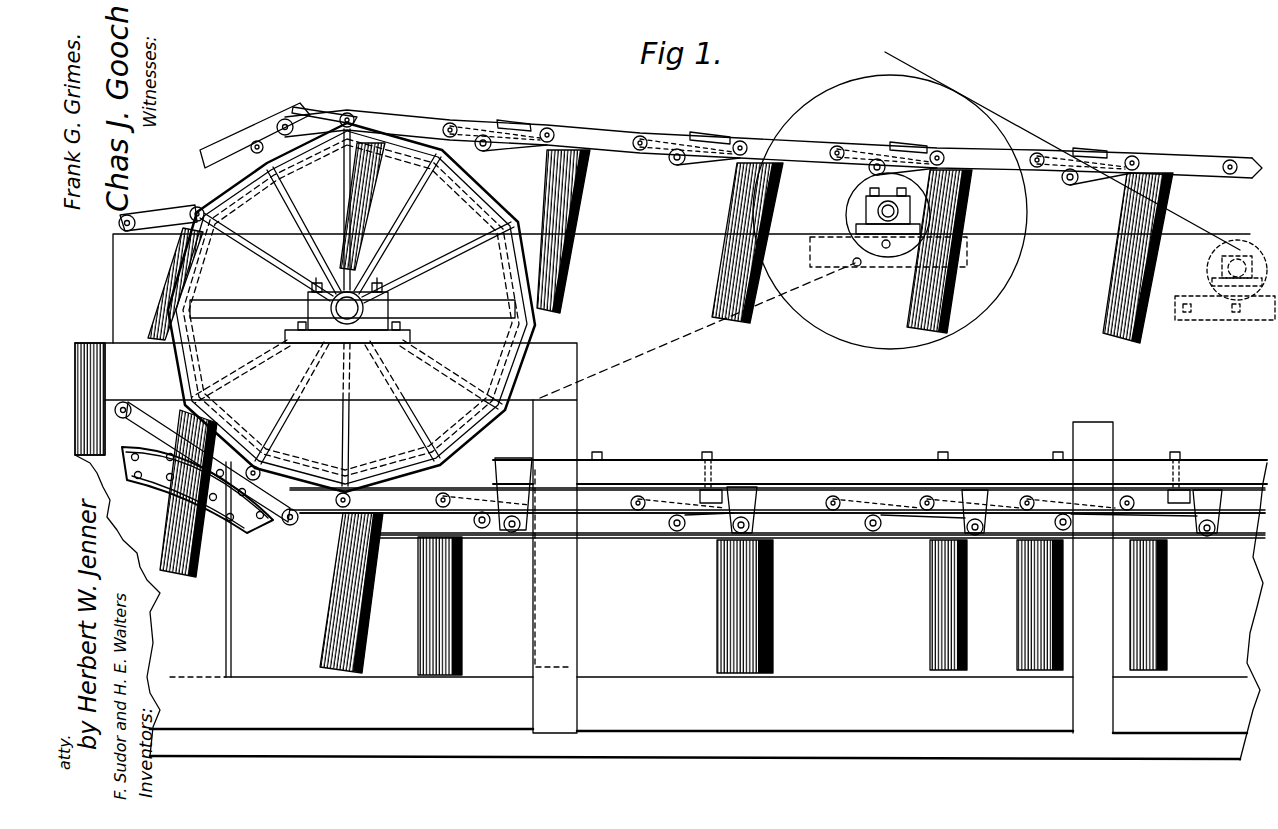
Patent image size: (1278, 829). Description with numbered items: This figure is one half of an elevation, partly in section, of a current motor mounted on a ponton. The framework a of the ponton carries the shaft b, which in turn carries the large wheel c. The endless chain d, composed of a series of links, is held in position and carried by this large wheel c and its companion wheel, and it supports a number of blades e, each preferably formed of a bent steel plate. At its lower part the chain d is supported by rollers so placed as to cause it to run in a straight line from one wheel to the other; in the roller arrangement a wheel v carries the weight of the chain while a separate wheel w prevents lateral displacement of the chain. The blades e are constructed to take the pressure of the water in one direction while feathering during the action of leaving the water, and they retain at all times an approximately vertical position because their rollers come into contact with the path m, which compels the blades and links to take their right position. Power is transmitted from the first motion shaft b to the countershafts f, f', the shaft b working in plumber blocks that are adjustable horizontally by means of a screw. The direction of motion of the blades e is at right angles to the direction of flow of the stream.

The framework of the ponton a is at (1135, 500).
The shaft b is at (349, 330).
The large wheel c is at (502, 256).
The endless chain d is at (1192, 167).
The blade e is at (325, 612).
The countershaft f is at (890, 225).
The countershaft f' is at (1221, 280).
The path m is at (925, 540).
The wheel v is at (1210, 537).
The wheel w is at (1183, 490).